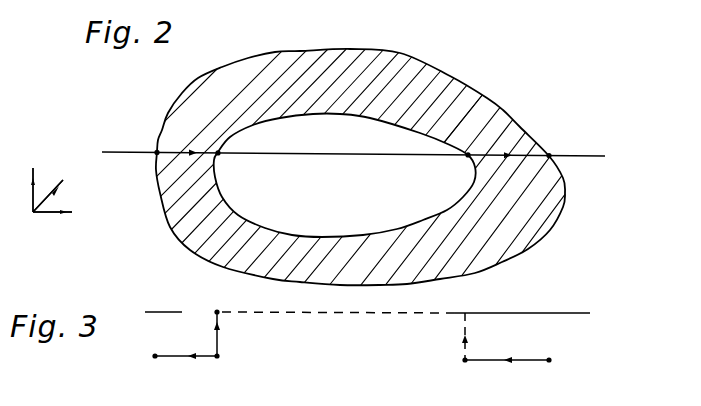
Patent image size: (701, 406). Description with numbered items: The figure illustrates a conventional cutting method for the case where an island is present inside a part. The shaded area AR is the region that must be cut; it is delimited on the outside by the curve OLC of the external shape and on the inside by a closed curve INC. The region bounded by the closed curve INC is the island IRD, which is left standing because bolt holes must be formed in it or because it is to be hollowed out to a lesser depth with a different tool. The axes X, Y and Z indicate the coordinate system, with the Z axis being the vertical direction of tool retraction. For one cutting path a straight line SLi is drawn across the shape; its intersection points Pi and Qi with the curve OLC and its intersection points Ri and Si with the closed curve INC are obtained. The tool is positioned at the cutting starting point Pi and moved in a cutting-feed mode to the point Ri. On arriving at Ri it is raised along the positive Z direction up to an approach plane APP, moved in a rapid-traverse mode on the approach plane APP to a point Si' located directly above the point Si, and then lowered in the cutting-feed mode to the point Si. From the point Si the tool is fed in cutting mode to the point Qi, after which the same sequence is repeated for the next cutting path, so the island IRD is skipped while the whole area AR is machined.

In FIG. 2, the straight line SLi is at (119, 148).
In FIG. 2, the curve of the external shape OLC is at (503, 110).
In FIG. 2, the closed curve INC is at (382, 115).
In FIG. 2, the island IRD is at (432, 100).
In FIG. 2, the area AR is at (535, 225).
In FIG. 2, the intersection point Qi is at (143, 164).
In FIG. 3, the intersection point Qi is at (180, 369).
In FIG. 2, the intersection point Si is at (224, 164).
In FIG. 3, the intersection point Si is at (215, 348).
In FIG. 2, the intersection point Ri is at (456, 168).
In FIG. 3, the intersection point Ri is at (461, 350).
In FIG. 2, the intersection point Pi is at (553, 145).
In FIG. 3, the intersection point Pi is at (508, 372).
In FIG. 3, the approach plane APP is at (565, 313).
In FIG. 3, the point directly above Si Si' is at (203, 309).
In FIG. 2, the X axis X is at (59, 214).
In FIG. 2, the Y axis Y is at (52, 189).
In FIG. 2, the Z axis Z is at (32, 182).